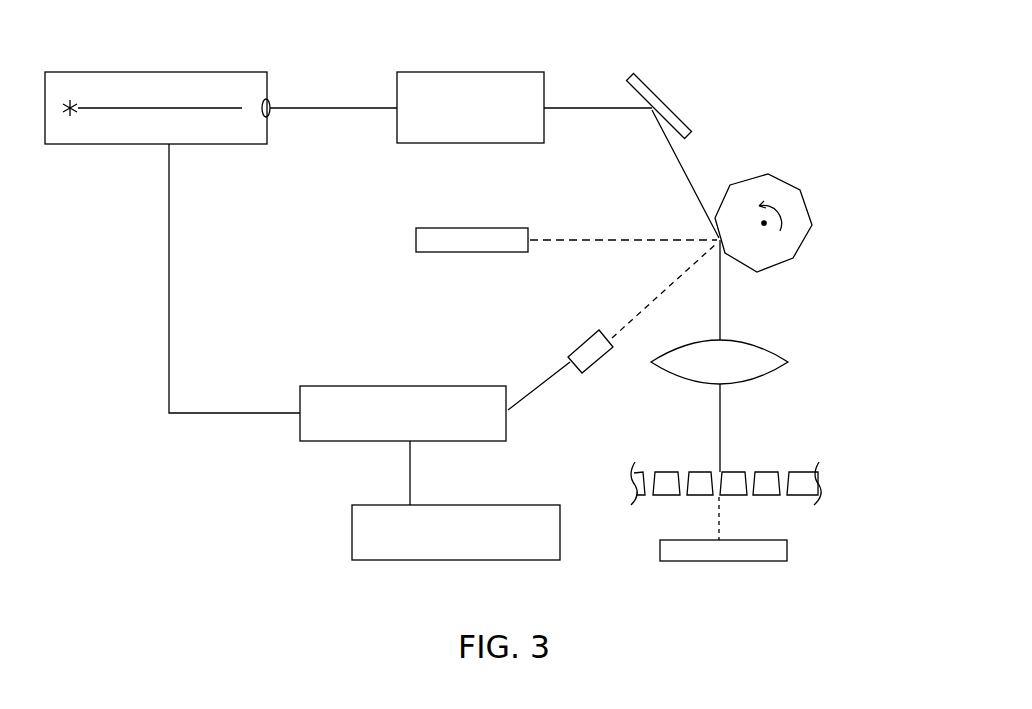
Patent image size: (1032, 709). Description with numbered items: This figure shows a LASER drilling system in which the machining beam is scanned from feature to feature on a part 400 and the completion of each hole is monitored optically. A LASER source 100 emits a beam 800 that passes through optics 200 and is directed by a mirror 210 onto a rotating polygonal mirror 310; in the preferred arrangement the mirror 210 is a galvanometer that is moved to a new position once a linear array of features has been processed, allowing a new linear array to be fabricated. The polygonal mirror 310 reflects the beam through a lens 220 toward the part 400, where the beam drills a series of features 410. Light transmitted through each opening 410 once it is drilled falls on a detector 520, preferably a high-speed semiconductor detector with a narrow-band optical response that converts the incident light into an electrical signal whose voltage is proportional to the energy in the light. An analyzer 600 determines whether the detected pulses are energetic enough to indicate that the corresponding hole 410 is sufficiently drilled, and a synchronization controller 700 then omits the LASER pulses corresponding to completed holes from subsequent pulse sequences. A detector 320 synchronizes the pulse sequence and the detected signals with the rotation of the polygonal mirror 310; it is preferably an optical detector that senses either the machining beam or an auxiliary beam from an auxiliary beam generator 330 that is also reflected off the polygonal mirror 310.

The laser 100 is at (92, 144).
The laser beam 800 is at (328, 108).
The optics 200 is at (545, 128).
The mirror 210 is at (646, 84).
The polygonal mirror 310 is at (780, 177).
The auxiliary beam generator 330 is at (416, 238).
The detector 320 is at (568, 355).
The synchronization controller 700 is at (315, 386).
The analyzer 600 is at (352, 527).
The lens 220 is at (772, 372).
The part 400 is at (773, 456).
The feature 410 is at (785, 470).
The detector 520 is at (745, 561).